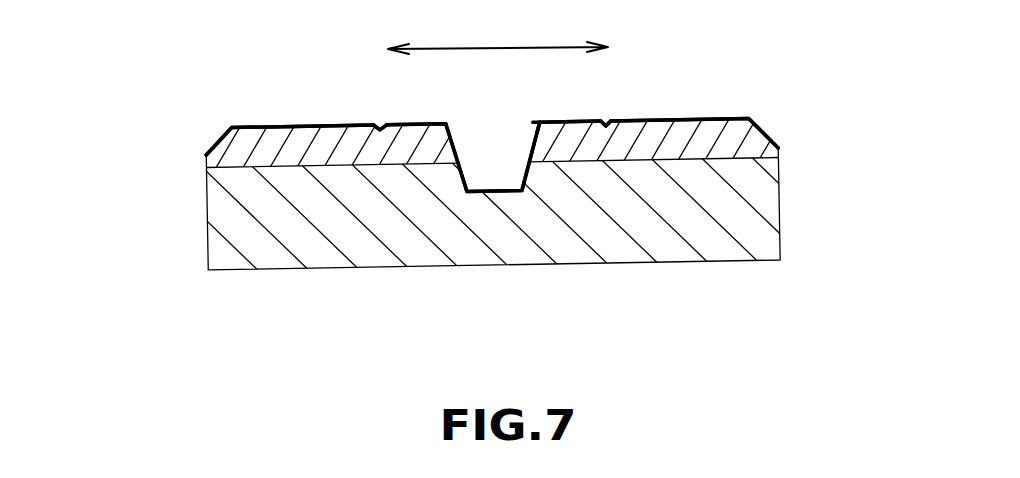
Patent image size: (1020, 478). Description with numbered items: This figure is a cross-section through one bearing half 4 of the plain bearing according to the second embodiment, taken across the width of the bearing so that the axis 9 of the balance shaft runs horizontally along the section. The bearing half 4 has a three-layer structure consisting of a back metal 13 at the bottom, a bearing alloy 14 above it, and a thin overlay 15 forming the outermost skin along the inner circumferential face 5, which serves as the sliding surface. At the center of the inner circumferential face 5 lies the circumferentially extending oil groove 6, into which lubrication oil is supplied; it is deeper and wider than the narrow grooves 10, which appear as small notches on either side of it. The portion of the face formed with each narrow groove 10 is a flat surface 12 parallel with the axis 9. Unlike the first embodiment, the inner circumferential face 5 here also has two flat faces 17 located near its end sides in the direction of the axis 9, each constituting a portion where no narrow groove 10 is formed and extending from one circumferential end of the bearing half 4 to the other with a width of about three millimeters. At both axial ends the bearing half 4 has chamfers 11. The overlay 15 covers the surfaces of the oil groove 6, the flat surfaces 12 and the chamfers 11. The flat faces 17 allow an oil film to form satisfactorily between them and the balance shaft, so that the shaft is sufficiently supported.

The bearing half 4 is at (577, 265).
The inner circumferential face 5 is at (553, 120).
The oil groove 6 is at (502, 172).
The axis 9 is at (479, 47).
The narrow groove 10 is at (380, 126).
The chamfer 11 is at (217, 140).
The flat surface 12 is at (427, 124).
The back metal 13 is at (760, 238).
The bearing alloy 14 is at (735, 150).
The overlay 15 is at (743, 123).
The flat face 17 is at (288, 124).